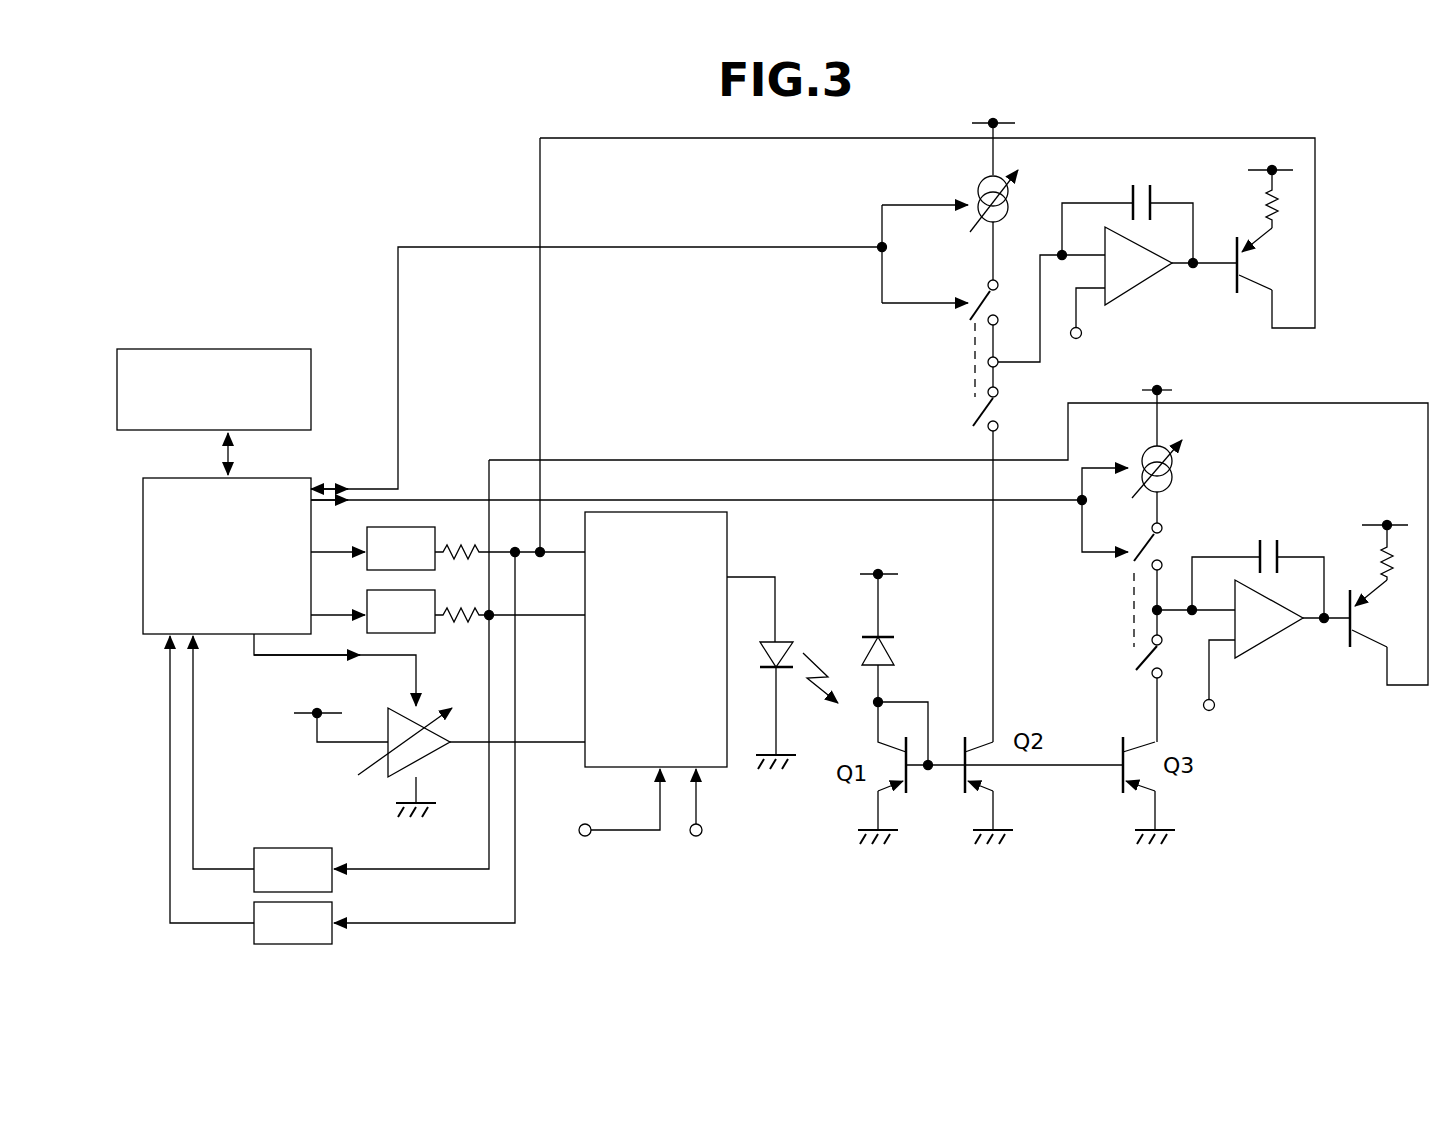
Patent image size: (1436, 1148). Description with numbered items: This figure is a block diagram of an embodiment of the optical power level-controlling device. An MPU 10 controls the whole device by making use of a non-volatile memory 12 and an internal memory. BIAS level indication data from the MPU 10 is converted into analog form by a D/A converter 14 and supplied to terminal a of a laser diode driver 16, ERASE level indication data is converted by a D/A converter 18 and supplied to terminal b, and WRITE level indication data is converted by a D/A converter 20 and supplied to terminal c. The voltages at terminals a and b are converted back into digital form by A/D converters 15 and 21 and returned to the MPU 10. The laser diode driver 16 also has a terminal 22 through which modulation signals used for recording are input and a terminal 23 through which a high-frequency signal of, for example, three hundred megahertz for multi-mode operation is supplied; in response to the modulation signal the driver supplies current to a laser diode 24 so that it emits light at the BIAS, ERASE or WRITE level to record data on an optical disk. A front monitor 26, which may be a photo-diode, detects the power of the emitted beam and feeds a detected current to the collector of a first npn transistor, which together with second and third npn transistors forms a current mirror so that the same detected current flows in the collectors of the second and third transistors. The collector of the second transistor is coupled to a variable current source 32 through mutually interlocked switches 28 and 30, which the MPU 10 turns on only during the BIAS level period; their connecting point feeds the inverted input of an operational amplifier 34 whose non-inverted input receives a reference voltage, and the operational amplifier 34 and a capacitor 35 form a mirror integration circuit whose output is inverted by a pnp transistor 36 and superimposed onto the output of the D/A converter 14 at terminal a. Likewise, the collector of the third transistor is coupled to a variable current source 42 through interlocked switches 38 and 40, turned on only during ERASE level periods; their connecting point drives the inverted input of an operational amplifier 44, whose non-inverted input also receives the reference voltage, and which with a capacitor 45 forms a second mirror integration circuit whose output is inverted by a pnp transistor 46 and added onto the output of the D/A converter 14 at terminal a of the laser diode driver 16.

The MPU 10 is at (296, 478).
The non-volatile memory 12 is at (262, 349).
The D/A converter 14 is at (367, 550).
The A/D converter 15 is at (332, 905).
The laser diode driver 16 is at (727, 540).
The D/A converter 18 is at (367, 612).
The D/A converter 20 is at (437, 762).
The A/D converter 21 is at (297, 848).
The terminal 22 is at (584, 837).
The terminal 23 is at (703, 830).
The laser diode 24 is at (763, 656).
The front monitor 26 is at (895, 657).
The switch 28 is at (965, 413).
The switch 30 is at (976, 292).
The variable current source 32 is at (974, 187).
The operational amplifier 34 is at (1150, 292).
The capacitor 35 is at (1160, 187).
The pnp transistor 36 is at (1237, 296).
The switch 38 is at (1126, 653).
The switch 40 is at (1112, 572).
The variable current source 42 is at (1190, 474).
The operational amplifier 44 is at (1272, 642).
The capacitor 45 is at (1273, 532).
The pnp transistor 46 is at (1348, 588).